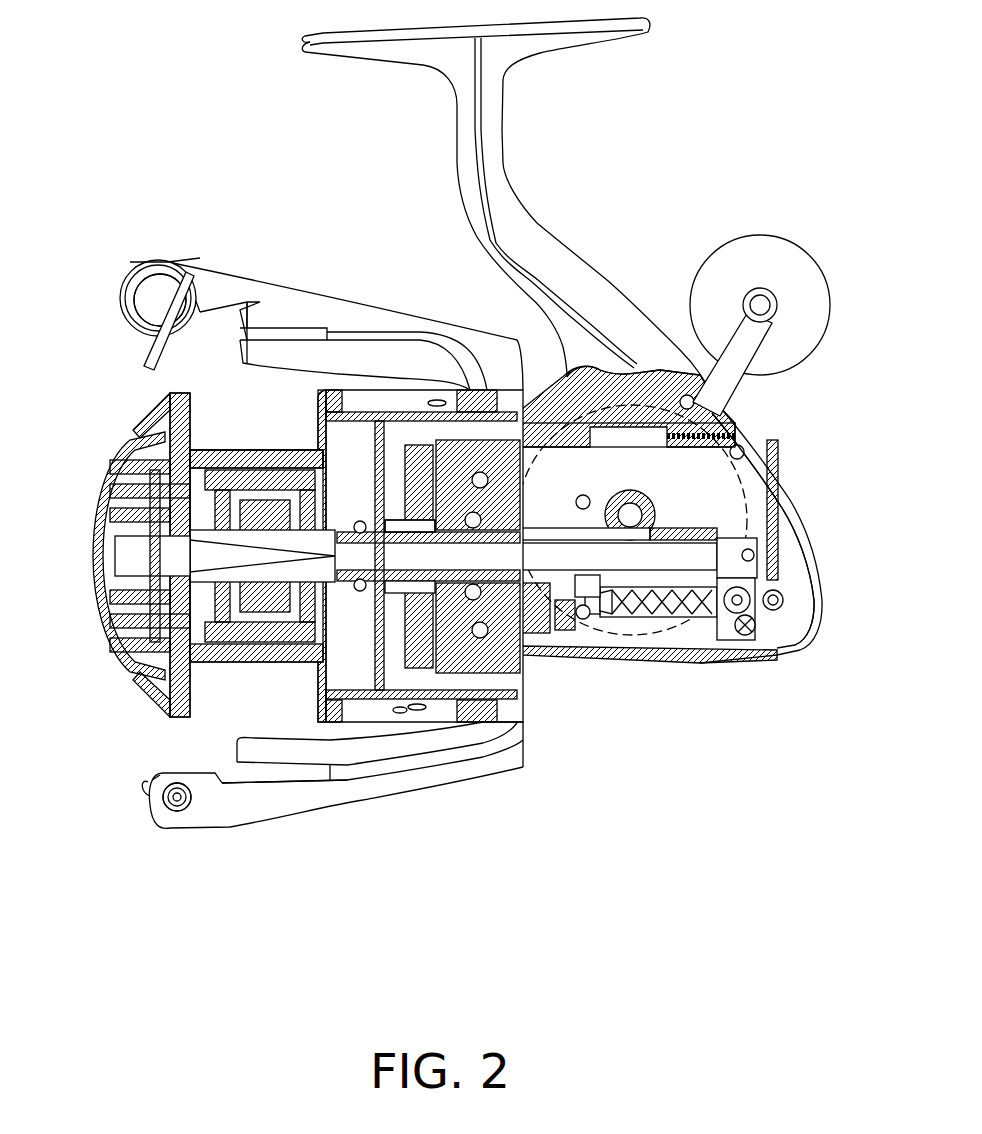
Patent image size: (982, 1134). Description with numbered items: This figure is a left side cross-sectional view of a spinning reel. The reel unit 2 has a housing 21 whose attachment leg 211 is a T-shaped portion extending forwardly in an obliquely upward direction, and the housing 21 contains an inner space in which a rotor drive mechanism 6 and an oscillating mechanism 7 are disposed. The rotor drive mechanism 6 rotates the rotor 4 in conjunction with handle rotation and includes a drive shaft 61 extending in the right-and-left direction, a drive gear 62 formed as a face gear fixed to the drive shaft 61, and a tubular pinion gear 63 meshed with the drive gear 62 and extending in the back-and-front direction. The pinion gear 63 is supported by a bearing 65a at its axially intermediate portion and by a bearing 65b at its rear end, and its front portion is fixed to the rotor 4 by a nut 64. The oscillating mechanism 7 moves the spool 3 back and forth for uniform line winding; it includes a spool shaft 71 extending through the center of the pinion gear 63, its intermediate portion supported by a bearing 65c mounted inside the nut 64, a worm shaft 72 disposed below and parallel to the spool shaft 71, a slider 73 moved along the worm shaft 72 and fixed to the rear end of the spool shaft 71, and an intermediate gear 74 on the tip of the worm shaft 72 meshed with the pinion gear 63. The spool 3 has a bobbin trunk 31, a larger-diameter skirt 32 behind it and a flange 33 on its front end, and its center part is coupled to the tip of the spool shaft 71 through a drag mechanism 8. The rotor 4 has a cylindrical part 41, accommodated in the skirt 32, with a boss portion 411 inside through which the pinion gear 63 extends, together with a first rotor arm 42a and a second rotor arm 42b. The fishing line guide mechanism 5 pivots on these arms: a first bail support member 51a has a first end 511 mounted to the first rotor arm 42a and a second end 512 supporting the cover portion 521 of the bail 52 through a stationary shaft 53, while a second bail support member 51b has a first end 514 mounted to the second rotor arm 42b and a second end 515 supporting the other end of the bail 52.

The reel unit 2 is at (661, 417).
The housing 21 is at (760, 310).
The attachment leg 211 is at (510, 211).
The spool 3 is at (234, 541).
The bobbin trunk 31 is at (256, 425).
The skirt 32 is at (352, 805).
The flange 33 is at (199, 542).
The rotor 4 is at (377, 412).
The cylindrical part 41 is at (420, 479).
The boss portion 411 is at (346, 768).
The first rotor arm 42a is at (345, 278).
The second rotor arm 42b is at (372, 817).
The fishing line guide mechanism 5 is at (153, 176).
The first bail support member 51a is at (241, 247).
The second bail support member 51b is at (204, 867).
The first end 511 is at (288, 279).
The second end 512 is at (168, 218).
The first end 514 is at (284, 843).
The second end 515 is at (164, 852).
The bail 52 is at (126, 568).
The cover portion 521 is at (110, 312).
The stationary shaft 53 is at (127, 284).
The rotor drive mechanism 6 is at (753, 484).
The drive shaft 61 is at (646, 492).
The drive gear 62 is at (773, 529).
The pinion gear 63 is at (608, 496).
The nut 64 is at (375, 381).
The bearing 65a is at (510, 732).
The bearing 65b is at (599, 668).
The bearing 65c is at (492, 633).
The oscillating mechanism 7 is at (651, 659).
The spool shaft 71 is at (662, 683).
The worm shaft 72 is at (624, 659).
The slider 73 is at (744, 653).
The intermediate gear 74 is at (565, 675).
The drag mechanism 8 is at (164, 583).